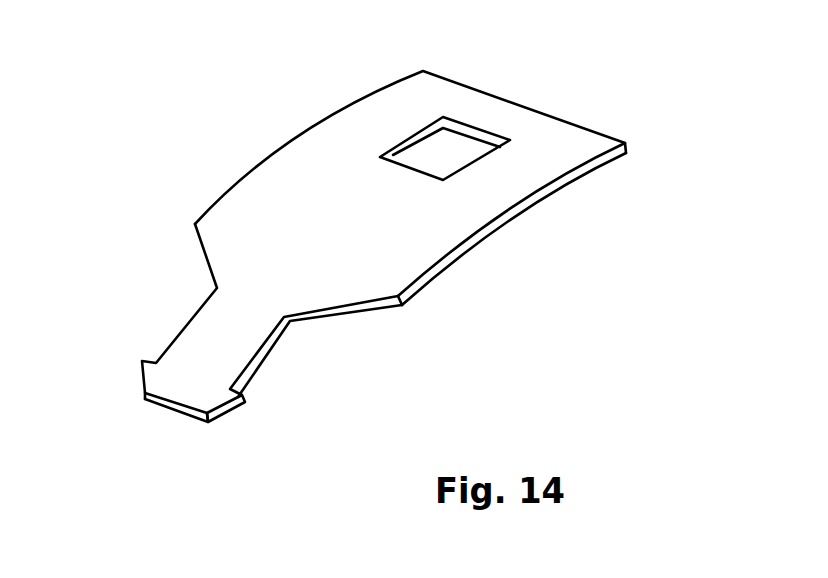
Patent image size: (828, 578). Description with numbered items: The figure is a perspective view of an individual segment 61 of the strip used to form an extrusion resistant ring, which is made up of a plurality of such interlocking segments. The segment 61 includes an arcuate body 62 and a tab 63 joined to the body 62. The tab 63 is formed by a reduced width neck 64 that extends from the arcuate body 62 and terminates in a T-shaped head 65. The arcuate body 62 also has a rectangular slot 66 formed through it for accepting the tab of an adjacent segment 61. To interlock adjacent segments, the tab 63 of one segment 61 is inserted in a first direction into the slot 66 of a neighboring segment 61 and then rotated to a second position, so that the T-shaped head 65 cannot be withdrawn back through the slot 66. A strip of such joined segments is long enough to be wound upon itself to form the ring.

The segment 61 is at (310, 104).
The arcuate body 62 is at (433, 235).
The tab 63 is at (188, 323).
The reduced width neck 64 is at (230, 357).
The T-shaped head 65 is at (207, 402).
The rectangular slot 66 is at (460, 143).